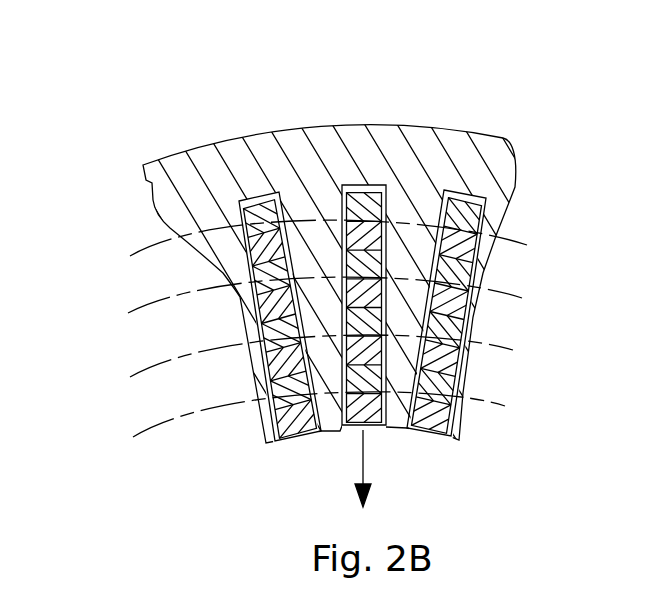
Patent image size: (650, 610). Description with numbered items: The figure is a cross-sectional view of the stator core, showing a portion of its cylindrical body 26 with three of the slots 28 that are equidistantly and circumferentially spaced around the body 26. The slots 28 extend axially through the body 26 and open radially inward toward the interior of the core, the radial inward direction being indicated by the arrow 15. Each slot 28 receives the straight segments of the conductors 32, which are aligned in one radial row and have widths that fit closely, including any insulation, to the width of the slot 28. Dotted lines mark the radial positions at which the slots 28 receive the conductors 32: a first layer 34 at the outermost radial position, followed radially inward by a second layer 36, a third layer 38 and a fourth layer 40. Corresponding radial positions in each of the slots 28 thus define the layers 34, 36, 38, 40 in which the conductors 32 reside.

The arrow 15 is at (366, 455).
The cylindrical body 26 is at (470, 157).
The slots 28 is at (227, 188).
The conductors 32 is at (261, 207).
The first layer 34 is at (150, 248).
The second layer 36 is at (153, 303).
The third layer 38 is at (157, 363).
The fourth layer 40 is at (160, 425).